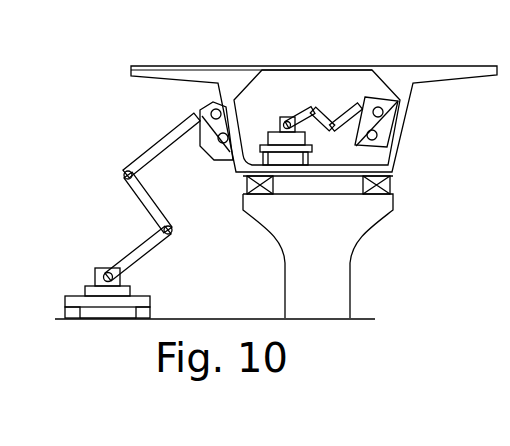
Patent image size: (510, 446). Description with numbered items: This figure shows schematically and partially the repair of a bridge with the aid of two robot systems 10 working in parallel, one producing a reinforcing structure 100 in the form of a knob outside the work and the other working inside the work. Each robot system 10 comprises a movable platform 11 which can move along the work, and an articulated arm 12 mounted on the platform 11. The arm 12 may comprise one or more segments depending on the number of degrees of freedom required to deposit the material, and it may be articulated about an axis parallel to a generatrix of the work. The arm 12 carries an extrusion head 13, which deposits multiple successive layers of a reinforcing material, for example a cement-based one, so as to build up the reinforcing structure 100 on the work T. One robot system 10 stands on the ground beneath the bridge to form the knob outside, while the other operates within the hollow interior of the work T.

The robot system 10 is at (213, 163).
The movable platform 11 is at (152, 303).
The articulated arm 12 is at (157, 240).
The extrusion head 13 is at (196, 117).
The reinforcing structure 100 is at (221, 152).
The tunnel / ceiling T is at (462, 70).